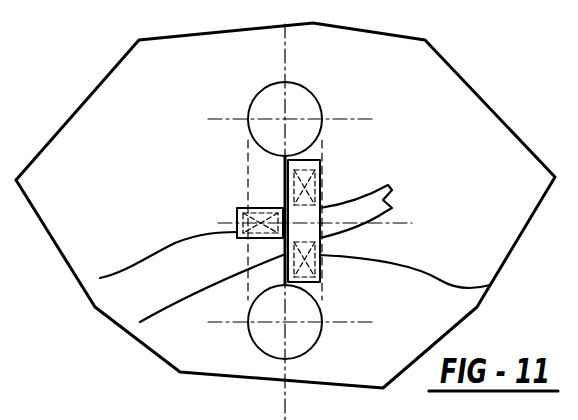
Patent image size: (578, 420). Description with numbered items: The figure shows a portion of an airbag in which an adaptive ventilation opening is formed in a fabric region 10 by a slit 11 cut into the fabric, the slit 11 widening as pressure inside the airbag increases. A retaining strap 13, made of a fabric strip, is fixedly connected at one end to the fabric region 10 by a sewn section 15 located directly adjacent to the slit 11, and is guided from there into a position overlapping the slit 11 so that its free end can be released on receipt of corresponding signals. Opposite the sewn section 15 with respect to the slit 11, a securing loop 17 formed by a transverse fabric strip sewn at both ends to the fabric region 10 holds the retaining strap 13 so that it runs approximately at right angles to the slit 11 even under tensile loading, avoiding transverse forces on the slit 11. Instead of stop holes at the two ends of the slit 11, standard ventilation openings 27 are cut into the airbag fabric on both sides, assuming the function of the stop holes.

The fabric region 10 is at (448, 105).
The slit 11 is at (140, 322).
The retaining strap 13 is at (367, 208).
The sewn section 15 is at (100, 278).
The securing loop 17 is at (490, 285).
The standard ventilation opening 27 is at (298, 100).